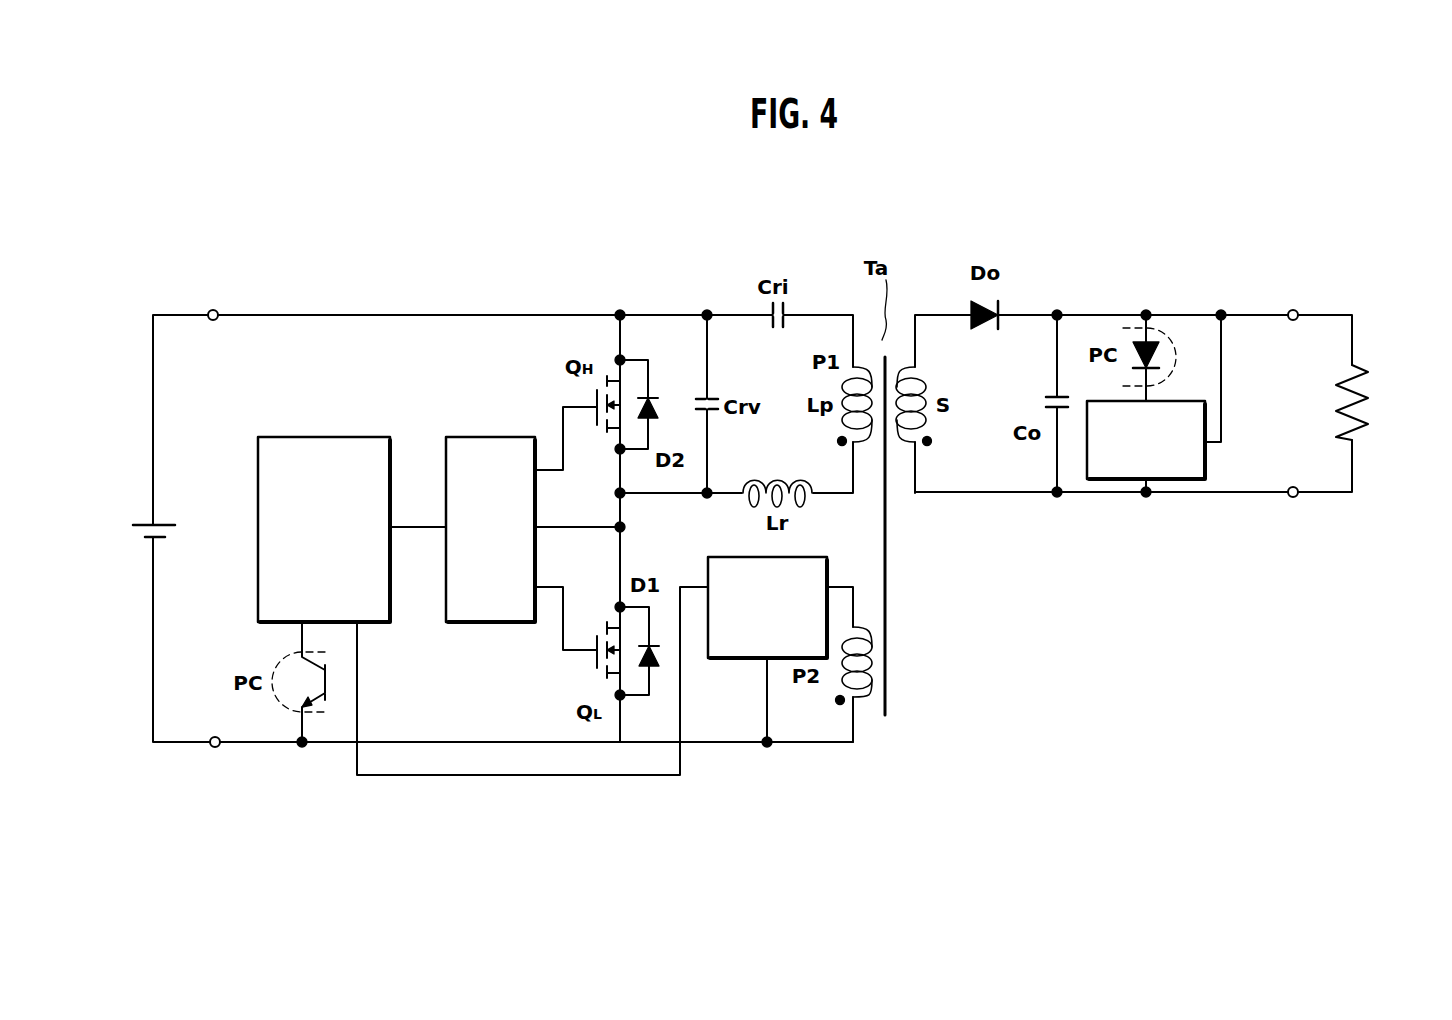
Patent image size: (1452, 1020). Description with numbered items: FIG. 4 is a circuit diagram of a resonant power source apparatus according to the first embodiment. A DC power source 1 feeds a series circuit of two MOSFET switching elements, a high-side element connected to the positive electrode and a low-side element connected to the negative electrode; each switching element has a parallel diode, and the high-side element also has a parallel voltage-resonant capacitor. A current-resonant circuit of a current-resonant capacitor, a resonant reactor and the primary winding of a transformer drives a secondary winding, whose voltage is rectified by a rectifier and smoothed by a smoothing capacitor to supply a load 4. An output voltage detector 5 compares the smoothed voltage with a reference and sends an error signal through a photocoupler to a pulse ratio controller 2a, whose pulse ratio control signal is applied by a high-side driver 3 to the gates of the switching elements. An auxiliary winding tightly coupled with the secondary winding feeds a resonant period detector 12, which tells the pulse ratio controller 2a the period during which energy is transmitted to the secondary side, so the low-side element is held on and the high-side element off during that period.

The DC power source 1 is at (165, 524).
The pulse ratio controller 2a is at (330, 437).
The high-side driver 3 is at (488, 437).
The load 4 is at (1368, 385).
The output voltage detector 5 is at (1205, 457).
The resonant period detector 12 is at (740, 658).